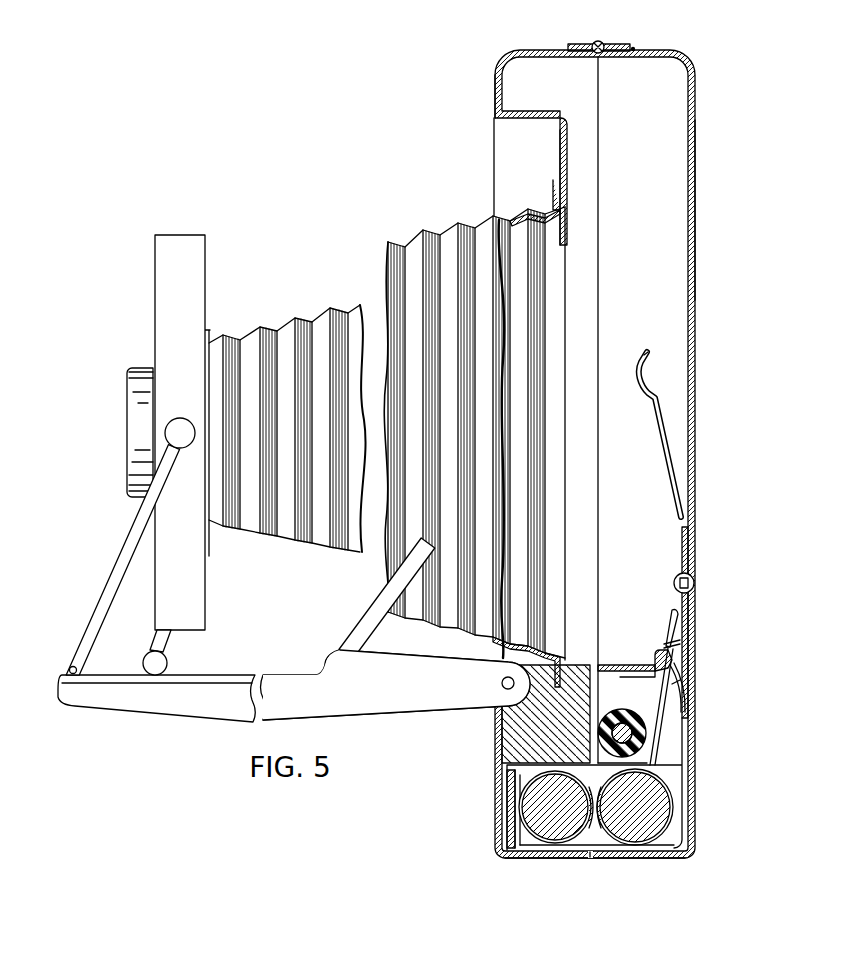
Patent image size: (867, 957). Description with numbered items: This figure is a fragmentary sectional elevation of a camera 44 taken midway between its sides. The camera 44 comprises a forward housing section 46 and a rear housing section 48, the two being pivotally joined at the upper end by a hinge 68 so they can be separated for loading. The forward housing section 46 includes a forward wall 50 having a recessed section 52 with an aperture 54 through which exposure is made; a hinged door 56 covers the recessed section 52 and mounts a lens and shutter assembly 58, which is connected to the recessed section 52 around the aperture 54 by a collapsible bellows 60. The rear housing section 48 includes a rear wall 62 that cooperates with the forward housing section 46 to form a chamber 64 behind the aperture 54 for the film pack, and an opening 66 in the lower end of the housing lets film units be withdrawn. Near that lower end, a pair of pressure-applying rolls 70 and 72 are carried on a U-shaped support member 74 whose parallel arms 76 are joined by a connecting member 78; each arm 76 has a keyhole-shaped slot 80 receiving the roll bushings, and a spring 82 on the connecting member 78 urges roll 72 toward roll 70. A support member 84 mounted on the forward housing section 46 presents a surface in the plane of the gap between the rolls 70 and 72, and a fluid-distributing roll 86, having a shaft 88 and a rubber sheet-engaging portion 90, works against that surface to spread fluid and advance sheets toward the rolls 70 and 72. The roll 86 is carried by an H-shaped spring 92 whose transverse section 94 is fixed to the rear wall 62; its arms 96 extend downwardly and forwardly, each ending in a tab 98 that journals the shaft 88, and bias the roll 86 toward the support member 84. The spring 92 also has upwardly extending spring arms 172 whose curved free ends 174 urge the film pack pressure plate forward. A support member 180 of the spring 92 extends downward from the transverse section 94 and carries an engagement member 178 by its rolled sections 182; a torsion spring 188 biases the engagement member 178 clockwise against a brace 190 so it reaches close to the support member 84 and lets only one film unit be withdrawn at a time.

The camera 44 is at (285, 369).
The forward housing section 46 is at (508, 402).
The rear housing section 48 is at (713, 305).
The forward wall 50 is at (486, 111).
The recessed section 52 is at (559, 156).
The aperture 54 is at (567, 248).
The door 56 is at (397, 710).
The lens and shutter assembly 58 is at (165, 312).
The collapsible bellows 60 is at (288, 330).
The rear wall 62 is at (694, 190).
The chamber 64 is at (650, 263).
The opening 66 is at (591, 862).
The hinge 68 is at (604, 43).
The pressure-applying roll 70 is at (656, 829).
The pressure-applying roll 72 is at (544, 840).
The U-shaped support member 74 is at (553, 866).
The arms 76 is at (580, 845).
The connecting member 78 is at (506, 814).
The slot 80 is at (584, 817).
The spring 82 is at (506, 781).
The support member 84 is at (518, 724).
The fluid-distributing roll 86 is at (665, 753).
The shaft 88 is at (645, 765).
The sheet-engaging portion 90 is at (640, 746).
The H-shaped spring 92 is at (667, 594).
The transverse section 94 is at (681, 548).
The arms 96 is at (663, 690).
The tab 98 is at (660, 722).
The spring arms 172 is at (662, 441).
The free ends 174 is at (640, 370).
The engagement member 178 is at (638, 668).
The support member 180 is at (670, 614).
The rolled sections 182 is at (658, 652).
The torsion spring 188 is at (680, 681).
The brace 190 is at (682, 642).